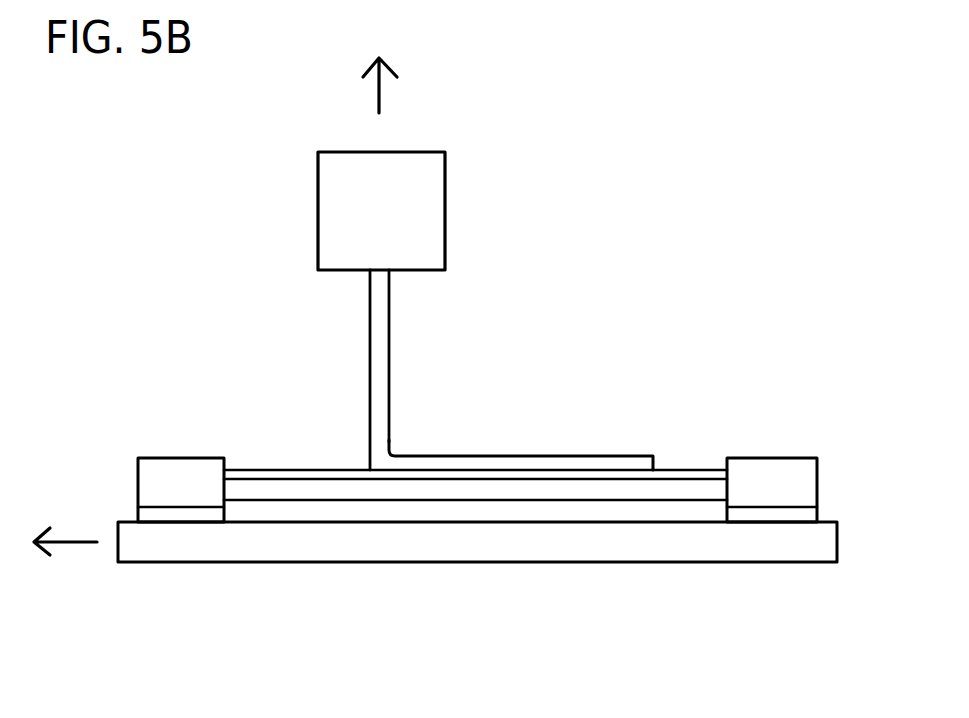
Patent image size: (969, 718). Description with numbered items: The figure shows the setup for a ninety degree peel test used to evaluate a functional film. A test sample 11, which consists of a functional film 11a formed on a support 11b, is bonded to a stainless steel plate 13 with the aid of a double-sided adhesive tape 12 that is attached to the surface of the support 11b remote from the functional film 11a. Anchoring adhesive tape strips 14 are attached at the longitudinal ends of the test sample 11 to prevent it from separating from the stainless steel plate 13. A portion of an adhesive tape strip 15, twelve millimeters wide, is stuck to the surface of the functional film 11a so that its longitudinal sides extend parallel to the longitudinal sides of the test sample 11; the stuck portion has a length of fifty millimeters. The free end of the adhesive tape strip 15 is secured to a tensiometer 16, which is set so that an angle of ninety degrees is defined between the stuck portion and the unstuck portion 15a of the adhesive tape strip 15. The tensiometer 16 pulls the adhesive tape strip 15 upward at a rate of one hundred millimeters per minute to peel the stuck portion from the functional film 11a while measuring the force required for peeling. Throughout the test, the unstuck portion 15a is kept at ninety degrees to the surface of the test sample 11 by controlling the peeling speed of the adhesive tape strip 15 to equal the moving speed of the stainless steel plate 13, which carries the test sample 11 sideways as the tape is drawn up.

The test sample 11 is at (462, 396).
The functional film 11a is at (357, 368).
The support 11b is at (475, 419).
The double-sided adhesive tape 12 is at (542, 512).
The stainless steel plate 13 is at (684, 548).
The anchoring adhesive tape strips 14 is at (152, 457).
The adhesive tape strip 15 is at (600, 457).
The unstuck portion 15a is at (366, 332).
The tensiometer 16 is at (428, 200).